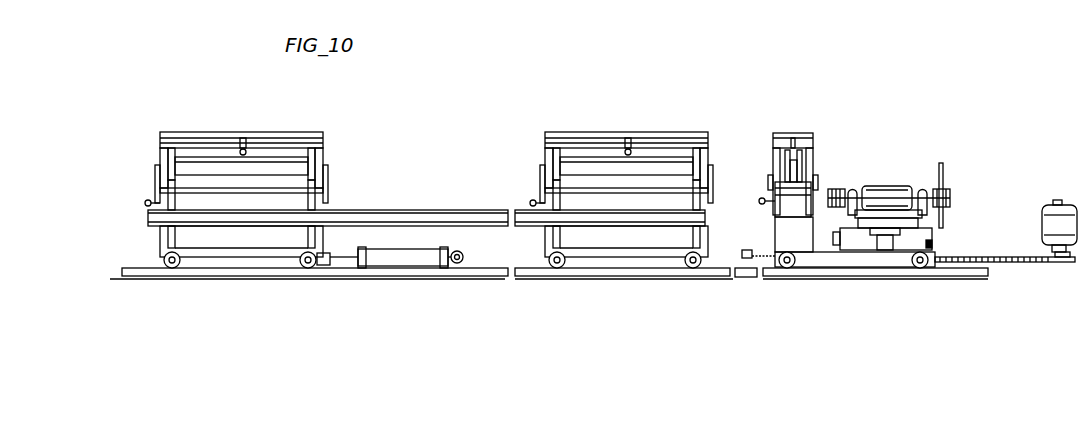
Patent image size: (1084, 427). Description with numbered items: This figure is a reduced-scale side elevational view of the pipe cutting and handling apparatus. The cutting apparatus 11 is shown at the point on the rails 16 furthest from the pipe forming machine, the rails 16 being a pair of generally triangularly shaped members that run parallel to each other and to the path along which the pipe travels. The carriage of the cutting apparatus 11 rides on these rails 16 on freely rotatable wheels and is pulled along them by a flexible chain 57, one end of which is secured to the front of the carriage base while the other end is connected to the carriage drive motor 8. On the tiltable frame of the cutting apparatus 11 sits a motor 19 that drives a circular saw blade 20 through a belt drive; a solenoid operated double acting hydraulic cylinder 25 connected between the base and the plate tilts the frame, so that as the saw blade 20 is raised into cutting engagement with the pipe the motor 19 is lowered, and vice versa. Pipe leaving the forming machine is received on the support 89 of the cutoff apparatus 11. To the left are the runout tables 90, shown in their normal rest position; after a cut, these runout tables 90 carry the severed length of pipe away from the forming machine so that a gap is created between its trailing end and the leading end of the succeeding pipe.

The carriage drive motor 8 is at (1048, 205).
The cutting apparatus 11 is at (878, 200).
The rails 16 is at (945, 272).
The motor 19 is at (880, 187).
The circular saw blade 20 is at (943, 176).
The double acting hydraulic cylinder 25 is at (887, 248).
The flexible chain 57 is at (760, 255).
The support 89 is at (788, 133).
The runout tables 90 is at (420, 183).